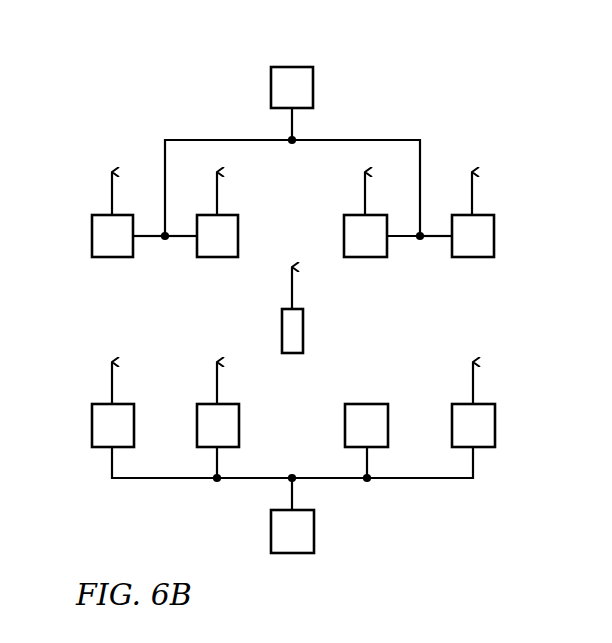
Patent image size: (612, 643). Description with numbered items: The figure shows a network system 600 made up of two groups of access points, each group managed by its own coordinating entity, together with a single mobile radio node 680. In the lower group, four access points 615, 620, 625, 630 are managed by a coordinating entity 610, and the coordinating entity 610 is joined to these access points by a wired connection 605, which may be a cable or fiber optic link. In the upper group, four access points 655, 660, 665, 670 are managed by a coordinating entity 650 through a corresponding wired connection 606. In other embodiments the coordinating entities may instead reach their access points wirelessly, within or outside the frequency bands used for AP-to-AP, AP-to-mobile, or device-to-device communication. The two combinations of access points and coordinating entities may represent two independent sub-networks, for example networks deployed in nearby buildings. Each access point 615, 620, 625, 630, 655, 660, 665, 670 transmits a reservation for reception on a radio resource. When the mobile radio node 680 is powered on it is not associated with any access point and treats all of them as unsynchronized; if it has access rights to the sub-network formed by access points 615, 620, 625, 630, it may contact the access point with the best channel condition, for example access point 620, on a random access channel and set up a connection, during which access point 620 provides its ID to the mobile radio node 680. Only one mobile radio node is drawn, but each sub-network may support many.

The network system 600 is at (153, 72).
The coordinating entity 650 is at (292, 66).
The wired connection 606 is at (358, 140).
The access point 655 is at (112, 258).
The access point 660 is at (217, 258).
The access point 665 is at (366, 258).
The access point 670 is at (472, 258).
The mobile radio node 680 is at (303, 330).
The wired connection 605 is at (418, 480).
The access point 615 is at (92, 426).
The access point 620 is at (239, 436).
The access point 625 is at (345, 416).
The access point 630 is at (495, 426).
The coordinating entity 610 is at (292, 554).